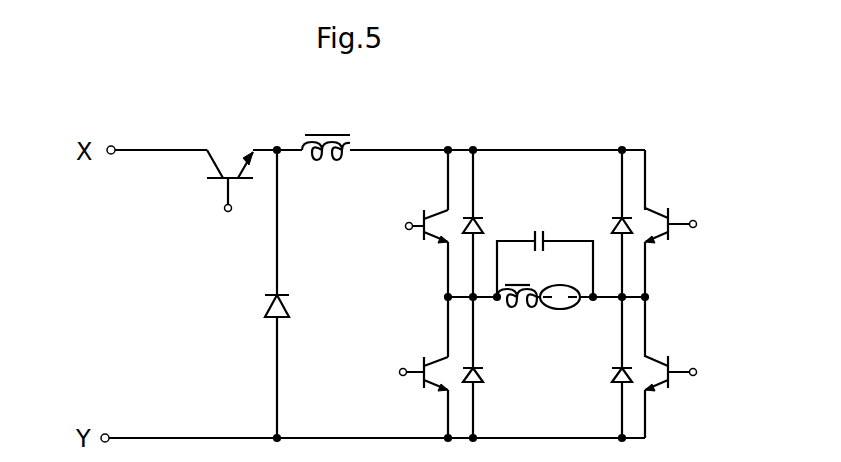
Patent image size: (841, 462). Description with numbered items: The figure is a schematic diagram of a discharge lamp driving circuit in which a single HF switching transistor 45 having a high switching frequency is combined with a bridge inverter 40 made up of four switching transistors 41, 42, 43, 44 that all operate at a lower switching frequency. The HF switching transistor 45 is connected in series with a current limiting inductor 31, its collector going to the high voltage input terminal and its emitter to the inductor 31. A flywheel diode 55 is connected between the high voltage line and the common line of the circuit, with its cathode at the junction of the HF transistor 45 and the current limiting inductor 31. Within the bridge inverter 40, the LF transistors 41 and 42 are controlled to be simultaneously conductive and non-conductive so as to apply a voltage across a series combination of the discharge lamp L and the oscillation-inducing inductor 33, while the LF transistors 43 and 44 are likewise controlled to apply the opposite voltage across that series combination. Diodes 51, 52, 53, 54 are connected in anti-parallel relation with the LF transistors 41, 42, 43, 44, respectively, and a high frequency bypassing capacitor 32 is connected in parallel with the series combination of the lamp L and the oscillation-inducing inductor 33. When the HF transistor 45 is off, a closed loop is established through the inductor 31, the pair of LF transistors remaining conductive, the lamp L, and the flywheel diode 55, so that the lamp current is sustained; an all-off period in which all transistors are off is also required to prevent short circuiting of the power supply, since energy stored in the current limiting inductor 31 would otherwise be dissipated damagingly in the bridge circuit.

The current limiting inductor 31 is at (331, 134).
The high frequency bypassing capacitor 32 is at (541, 233).
The oscillation-inducing inductor 33 is at (508, 302).
The bridge inverter 40 is at (550, 149).
The switching transistor 41 is at (432, 225).
The switching transistor 42 is at (668, 368).
The switching transistor 43 is at (665, 223).
The switching transistor 44 is at (427, 375).
The HF switching transistor 45 is at (226, 170).
The diode 51 is at (483, 229).
The diode 52 is at (612, 372).
The diode 53 is at (617, 226).
The diode 54 is at (482, 375).
The flywheel diode 55 is at (265, 310).
The discharge lamp L is at (563, 311).